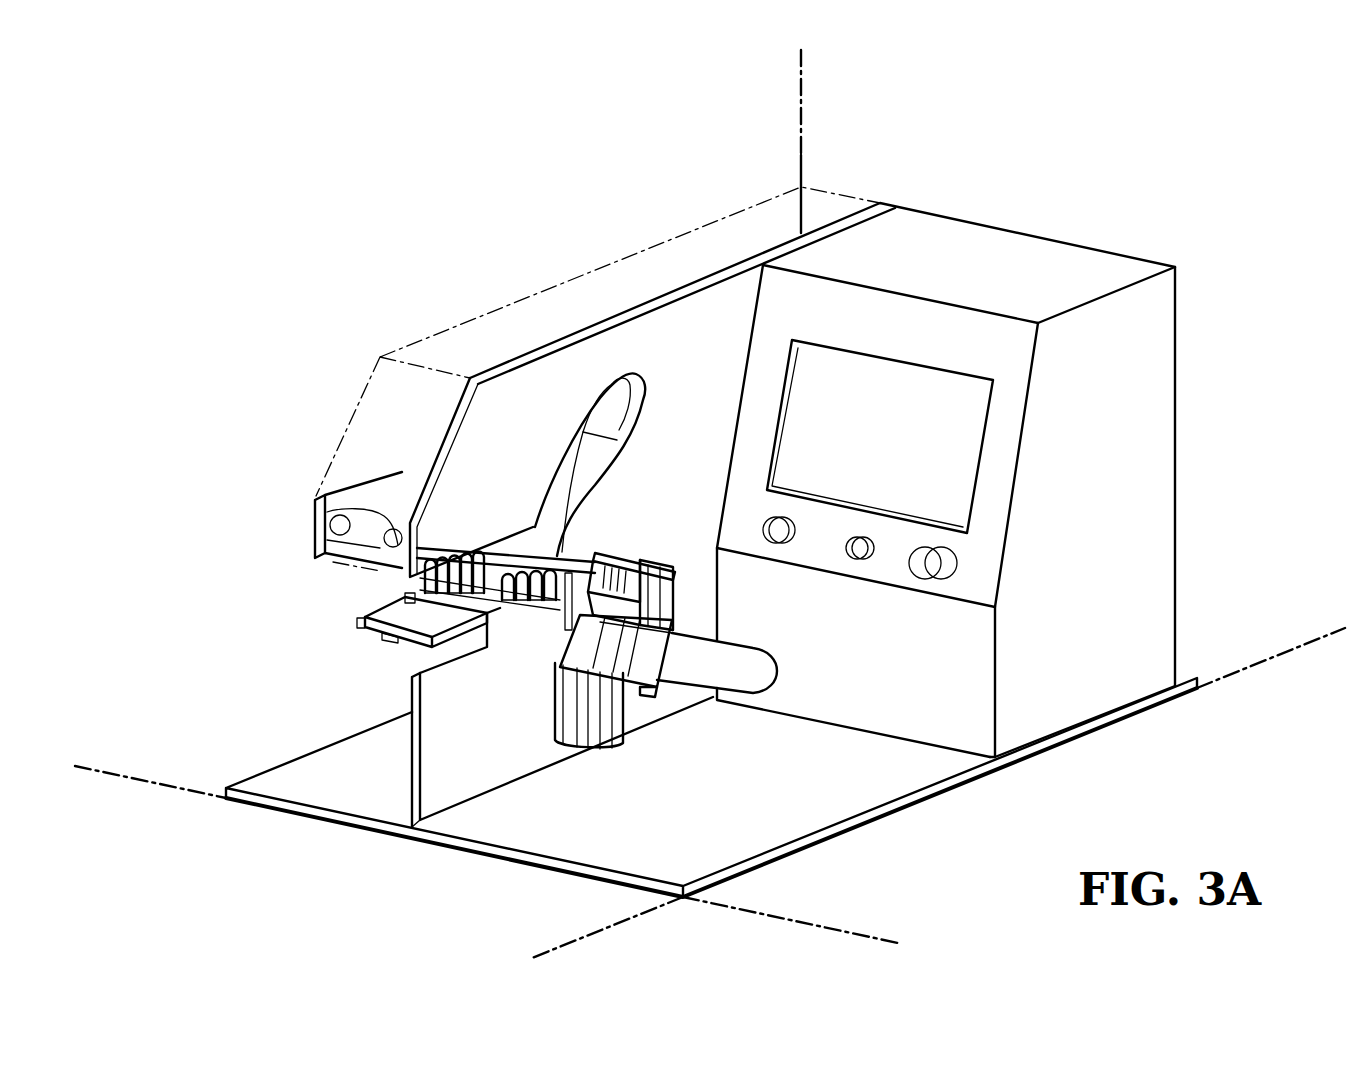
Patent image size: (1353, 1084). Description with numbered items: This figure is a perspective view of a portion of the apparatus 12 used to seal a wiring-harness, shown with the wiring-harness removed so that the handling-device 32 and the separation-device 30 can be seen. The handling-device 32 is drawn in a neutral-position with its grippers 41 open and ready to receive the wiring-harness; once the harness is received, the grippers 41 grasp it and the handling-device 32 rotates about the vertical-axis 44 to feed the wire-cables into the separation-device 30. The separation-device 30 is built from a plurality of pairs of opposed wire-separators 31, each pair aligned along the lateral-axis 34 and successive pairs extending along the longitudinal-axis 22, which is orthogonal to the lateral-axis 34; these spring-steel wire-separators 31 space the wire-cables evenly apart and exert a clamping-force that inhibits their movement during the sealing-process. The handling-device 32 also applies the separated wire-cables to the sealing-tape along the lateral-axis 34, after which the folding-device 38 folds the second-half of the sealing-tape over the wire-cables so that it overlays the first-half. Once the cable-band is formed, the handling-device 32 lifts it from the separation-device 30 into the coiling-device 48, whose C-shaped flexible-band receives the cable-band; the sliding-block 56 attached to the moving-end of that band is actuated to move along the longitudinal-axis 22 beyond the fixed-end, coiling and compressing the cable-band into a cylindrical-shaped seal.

The apparatus 12 is at (383, 288).
The longitudinal-axis 22 is at (543, 955).
The separation-device 30 is at (527, 633).
The wire-separators 31 is at (535, 577).
The handling-device 32 is at (745, 675).
The lateral-axis 34 is at (857, 933).
The folding-device 38 is at (377, 623).
The grippers 41 is at (652, 558).
The vertical-axis 44 is at (802, 128).
The coiling-device 48 is at (612, 417).
The sliding-block 56 is at (368, 512).